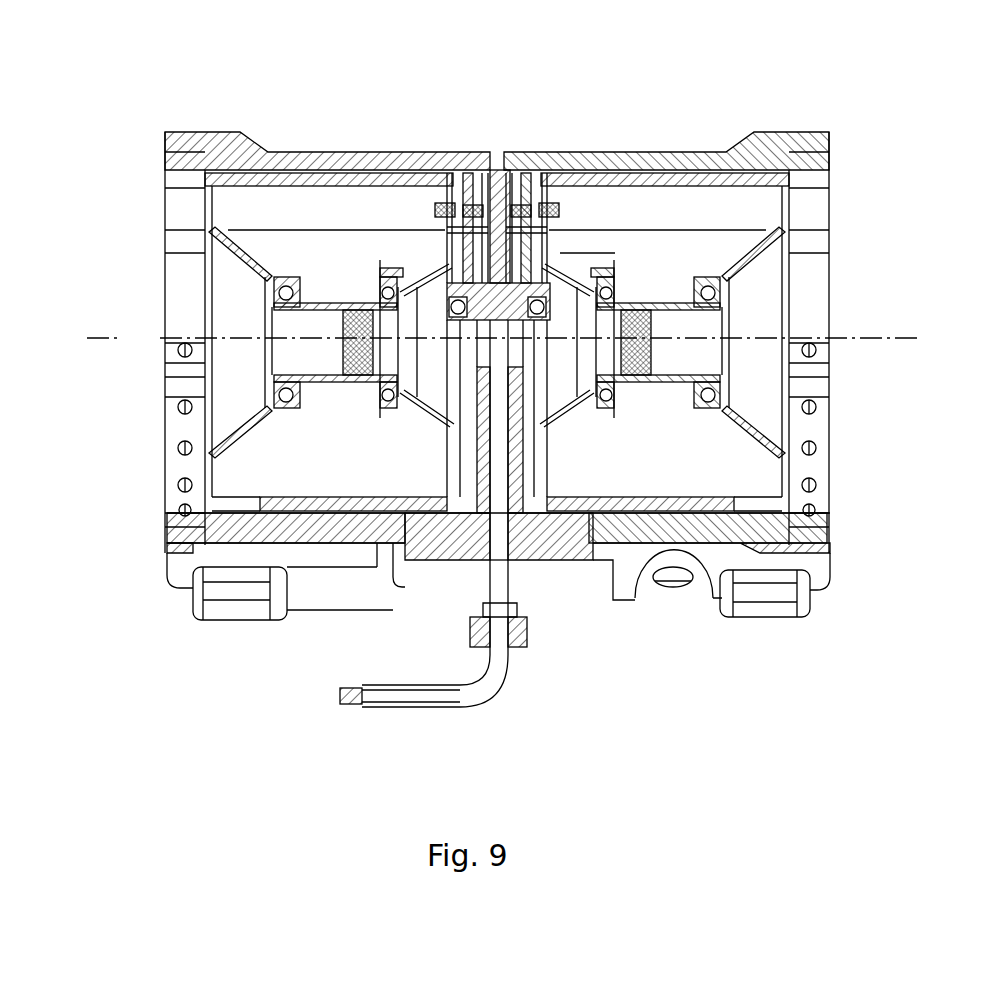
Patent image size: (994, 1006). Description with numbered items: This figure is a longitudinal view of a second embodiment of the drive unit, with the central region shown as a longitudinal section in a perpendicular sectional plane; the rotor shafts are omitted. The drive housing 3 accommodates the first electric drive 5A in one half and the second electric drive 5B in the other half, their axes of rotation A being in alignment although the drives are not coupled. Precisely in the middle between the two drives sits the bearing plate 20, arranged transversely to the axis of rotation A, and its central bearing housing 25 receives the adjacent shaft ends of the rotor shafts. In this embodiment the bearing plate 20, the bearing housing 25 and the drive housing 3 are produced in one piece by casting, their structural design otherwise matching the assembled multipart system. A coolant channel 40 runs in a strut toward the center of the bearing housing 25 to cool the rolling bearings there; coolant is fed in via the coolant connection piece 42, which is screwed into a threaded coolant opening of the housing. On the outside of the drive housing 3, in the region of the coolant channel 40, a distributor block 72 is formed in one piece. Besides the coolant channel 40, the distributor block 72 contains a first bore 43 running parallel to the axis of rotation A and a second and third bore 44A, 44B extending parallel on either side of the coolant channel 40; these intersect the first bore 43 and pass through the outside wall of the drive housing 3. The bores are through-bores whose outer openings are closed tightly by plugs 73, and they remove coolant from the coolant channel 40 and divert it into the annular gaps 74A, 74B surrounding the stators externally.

The drive housing 3 is at (482, 126).
The first electric drive 5A is at (288, 162).
The second electric drive 5B is at (705, 165).
The bearing plate 20 is at (560, 168).
The bearing housing 25 is at (530, 292).
The coolant channel 40 is at (500, 512).
The coolant connection piece 42 is at (495, 705).
The first bore 43 is at (462, 627).
The second bore 44A is at (385, 547).
The third bore 44B is at (637, 553).
The distributor block 72 is at (415, 515).
The plug 73 is at (395, 560).
The annular gap 74A is at (257, 507).
The annular gap 74B is at (690, 520).
The axis of rotation A is at (117, 337).